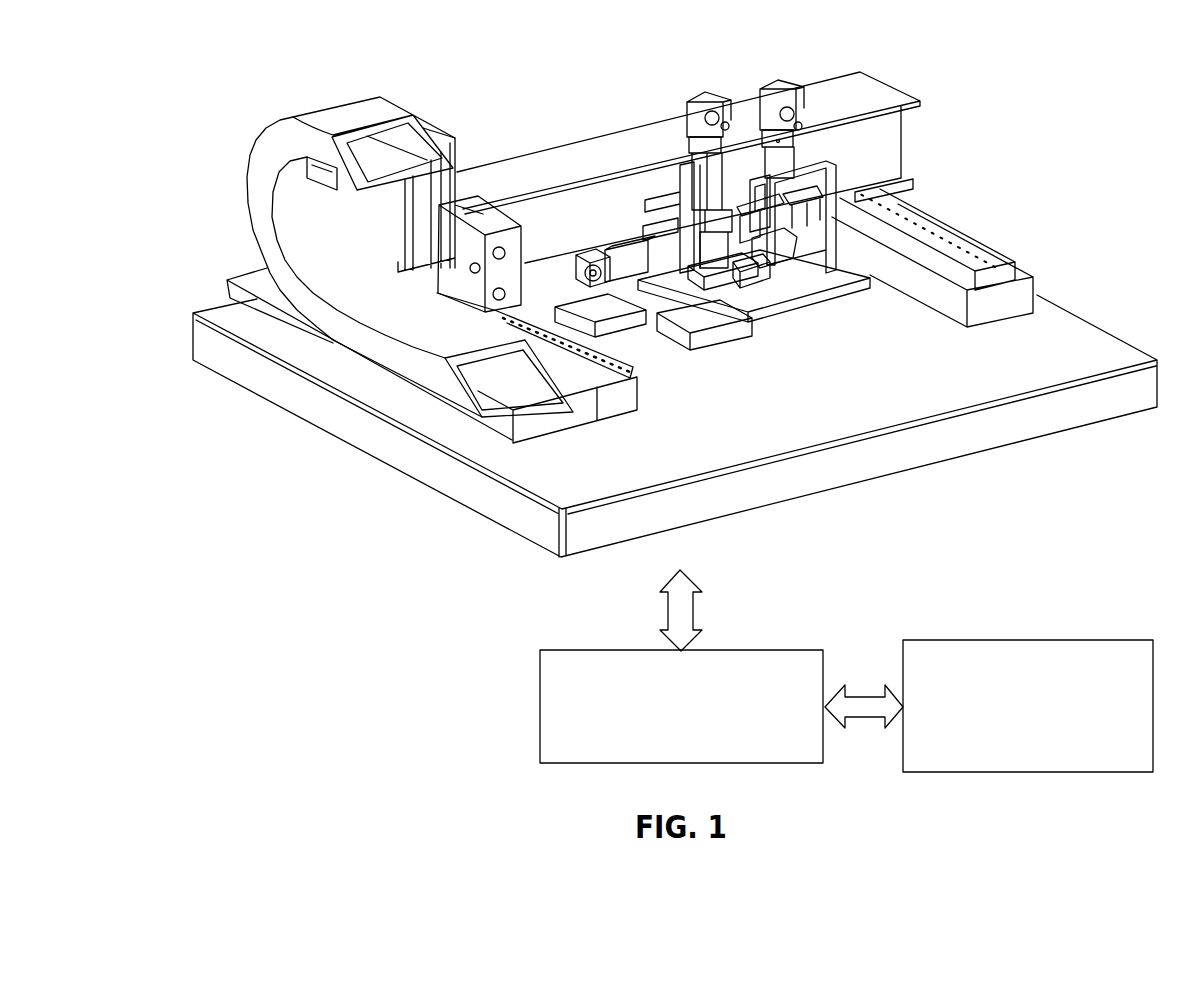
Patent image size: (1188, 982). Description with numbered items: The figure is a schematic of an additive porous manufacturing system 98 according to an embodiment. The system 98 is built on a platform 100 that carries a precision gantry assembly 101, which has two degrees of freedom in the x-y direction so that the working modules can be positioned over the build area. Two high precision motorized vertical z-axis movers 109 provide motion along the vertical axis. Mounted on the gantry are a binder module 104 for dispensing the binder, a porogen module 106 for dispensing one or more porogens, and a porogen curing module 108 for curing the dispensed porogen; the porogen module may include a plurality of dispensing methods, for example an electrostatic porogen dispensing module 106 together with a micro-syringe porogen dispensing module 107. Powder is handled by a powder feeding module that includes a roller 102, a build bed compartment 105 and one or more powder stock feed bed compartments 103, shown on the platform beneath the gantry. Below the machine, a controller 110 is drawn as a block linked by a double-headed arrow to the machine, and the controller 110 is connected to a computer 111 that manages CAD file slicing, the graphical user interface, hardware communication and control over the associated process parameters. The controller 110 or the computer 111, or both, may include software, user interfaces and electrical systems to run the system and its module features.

The additive porous manufacturing system 98 is at (148, 72).
The platform 100 is at (1106, 340).
The precision gantry assembly 101 is at (287, 130).
The roller 102 is at (625, 273).
The powder stock feed bed compartment 103 is at (576, 262).
The binder module 104 is at (667, 297).
The build bed compartment 105 is at (713, 317).
The porogen module 106 is at (747, 270).
The micro-syringe porogen dispensing module 107 is at (763, 260).
The porogen curing module 108 is at (807, 265).
The high precision motorized vertical z-axis mover 109 is at (688, 95).
The controller 110 is at (681, 706).
The computer 111 is at (1028, 706).